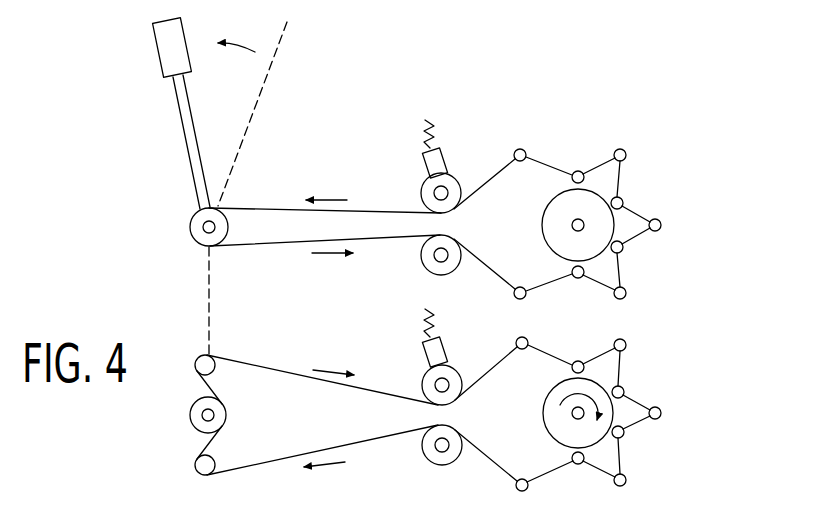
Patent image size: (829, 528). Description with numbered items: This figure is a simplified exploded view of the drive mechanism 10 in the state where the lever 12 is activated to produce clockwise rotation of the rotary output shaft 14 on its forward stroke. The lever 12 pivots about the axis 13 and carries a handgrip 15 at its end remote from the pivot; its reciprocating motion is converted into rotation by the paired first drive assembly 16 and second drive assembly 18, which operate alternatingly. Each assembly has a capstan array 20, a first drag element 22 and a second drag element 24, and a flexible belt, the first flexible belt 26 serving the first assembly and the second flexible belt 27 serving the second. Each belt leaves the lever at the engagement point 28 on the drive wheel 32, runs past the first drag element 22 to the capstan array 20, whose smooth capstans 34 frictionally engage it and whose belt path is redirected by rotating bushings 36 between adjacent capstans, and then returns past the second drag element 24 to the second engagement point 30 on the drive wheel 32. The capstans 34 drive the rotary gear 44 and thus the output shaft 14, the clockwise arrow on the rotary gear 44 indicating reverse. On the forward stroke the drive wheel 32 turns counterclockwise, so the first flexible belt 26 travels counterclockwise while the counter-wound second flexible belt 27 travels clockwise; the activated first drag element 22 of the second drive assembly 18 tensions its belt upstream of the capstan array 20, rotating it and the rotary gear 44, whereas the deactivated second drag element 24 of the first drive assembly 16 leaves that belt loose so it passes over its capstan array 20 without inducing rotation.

The drive mechanism 10 is at (673, 98).
The lever 12 is at (187, 145).
The axis 13 is at (207, 297).
The rotary output shaft 14 is at (577, 232).
The handgrip 15 is at (158, 50).
The first drive assembly 16 is at (706, 224).
The second drive assembly 18 is at (706, 413).
The capstan array 20 is at (630, 254).
The first drag element 22 is at (455, 180).
The second drag element 24 is at (423, 263).
The first flexible belt 26 is at (273, 247).
The second flexible belt 27 is at (257, 463).
The engagement point 28 is at (238, 186).
The second engagement point 30 is at (219, 252).
The drive wheel 32 is at (192, 222).
The capstans 34 is at (577, 171).
The rotating bushings 36 is at (518, 149).
The rotary gear 44 is at (556, 213).